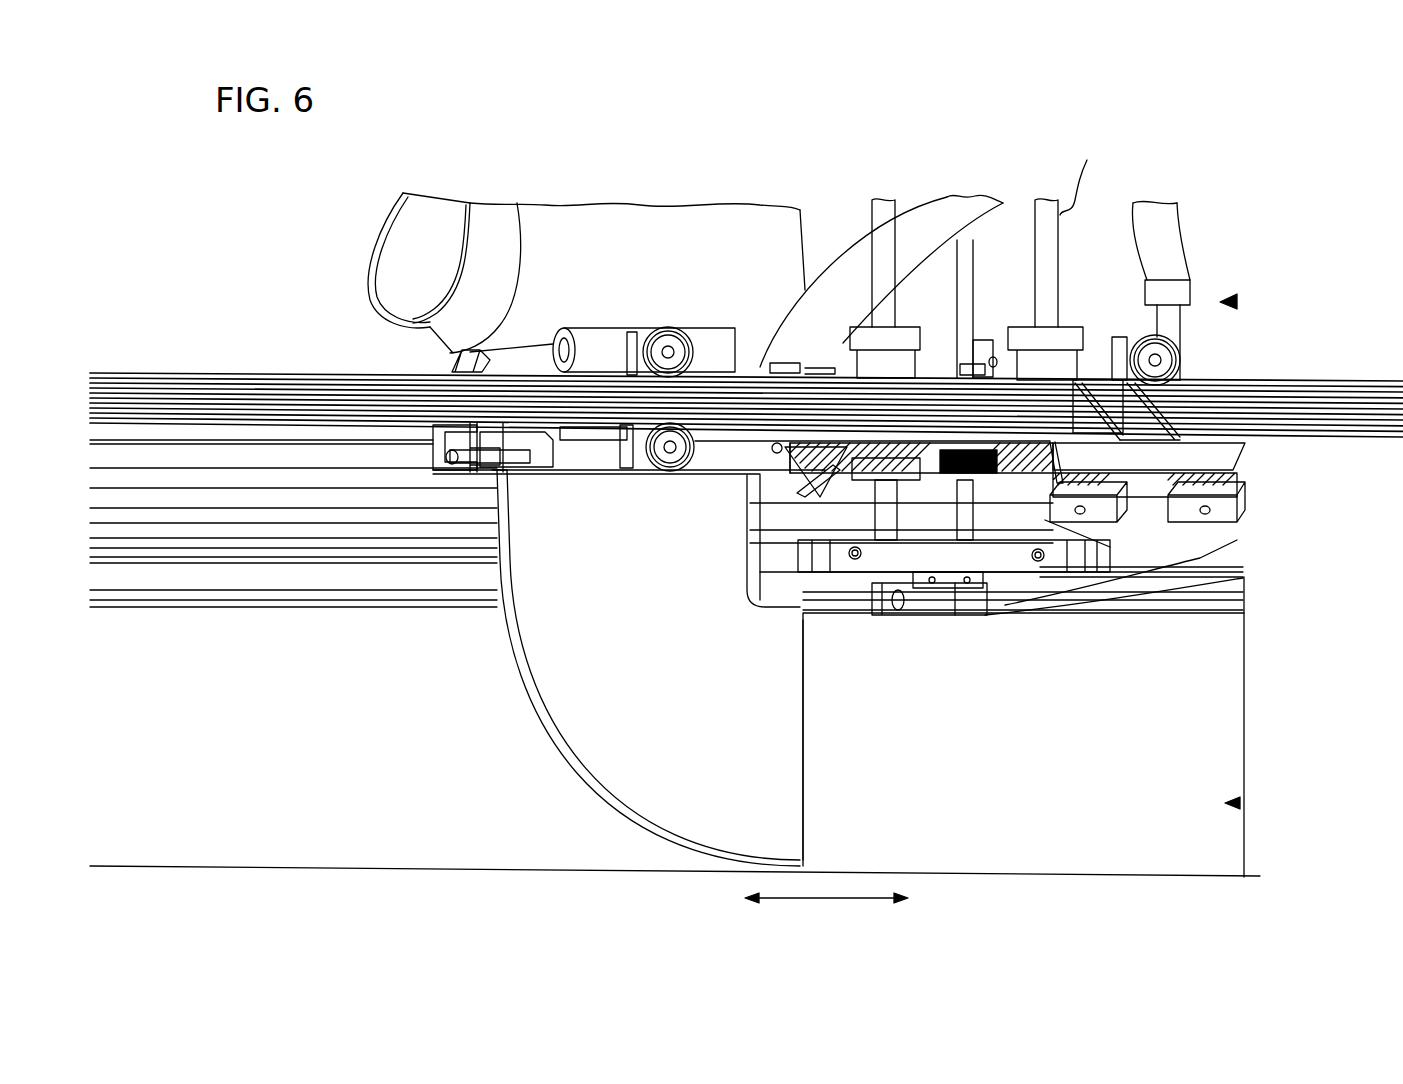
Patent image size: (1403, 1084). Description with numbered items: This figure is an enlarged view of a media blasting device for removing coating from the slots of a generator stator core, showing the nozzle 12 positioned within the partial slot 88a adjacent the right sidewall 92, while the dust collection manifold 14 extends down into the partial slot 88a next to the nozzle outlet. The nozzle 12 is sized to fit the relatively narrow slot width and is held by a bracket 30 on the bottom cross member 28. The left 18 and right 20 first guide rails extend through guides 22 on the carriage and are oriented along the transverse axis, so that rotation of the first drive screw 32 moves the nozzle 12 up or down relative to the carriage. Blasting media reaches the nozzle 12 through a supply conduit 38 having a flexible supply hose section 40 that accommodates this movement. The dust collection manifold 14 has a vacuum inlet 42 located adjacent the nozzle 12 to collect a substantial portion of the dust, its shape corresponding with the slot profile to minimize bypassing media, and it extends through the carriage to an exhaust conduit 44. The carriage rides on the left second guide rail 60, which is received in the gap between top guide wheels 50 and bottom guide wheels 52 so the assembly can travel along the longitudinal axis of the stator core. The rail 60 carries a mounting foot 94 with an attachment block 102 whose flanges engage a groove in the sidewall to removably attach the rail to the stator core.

The nozzle 12 is at (940, 617).
The dust collection manifold 14 is at (522, 700).
The left first guide rail 18 is at (872, 218).
The right first guide rail 20 is at (1060, 215).
The guide 22 is at (905, 327).
The bottom cross member 28 is at (880, 555).
The bracket 30 is at (970, 600).
The first drive screw 32 is at (1245, 588).
The supply conduit 38 is at (1237, 302).
The supply hose section 40 is at (1185, 225).
The vacuum inlet 42 is at (807, 667).
The exhaust conduit 44 is at (543, 205).
The top guide wheel 50 is at (657, 328).
The bottom guide wheel 52 is at (657, 470).
The left second guide rail 60 is at (178, 373).
The partial slot 88a is at (1240, 803).
The right sidewall 92 is at (1230, 670).
The mounting foot 94 is at (1245, 448).
The attachment block 102 is at (1240, 488).